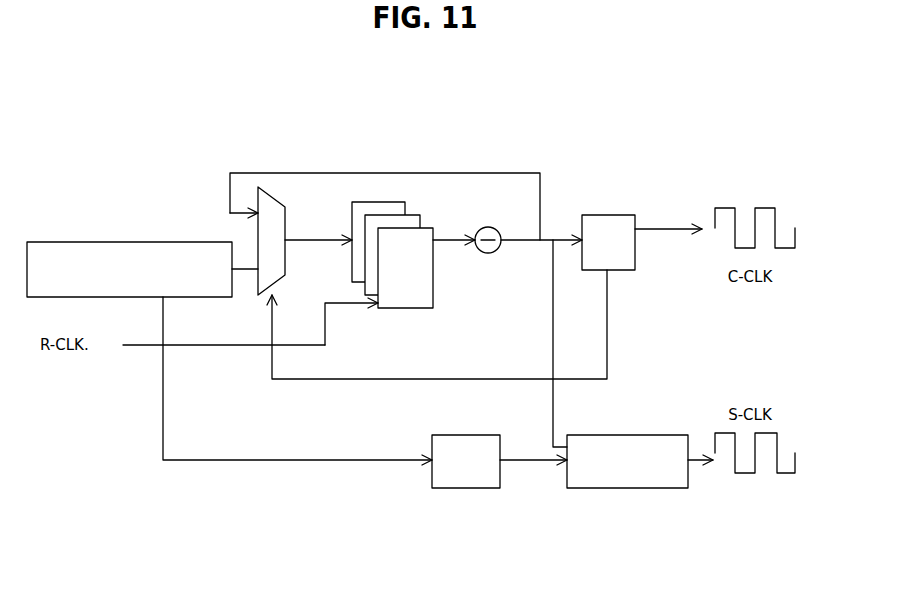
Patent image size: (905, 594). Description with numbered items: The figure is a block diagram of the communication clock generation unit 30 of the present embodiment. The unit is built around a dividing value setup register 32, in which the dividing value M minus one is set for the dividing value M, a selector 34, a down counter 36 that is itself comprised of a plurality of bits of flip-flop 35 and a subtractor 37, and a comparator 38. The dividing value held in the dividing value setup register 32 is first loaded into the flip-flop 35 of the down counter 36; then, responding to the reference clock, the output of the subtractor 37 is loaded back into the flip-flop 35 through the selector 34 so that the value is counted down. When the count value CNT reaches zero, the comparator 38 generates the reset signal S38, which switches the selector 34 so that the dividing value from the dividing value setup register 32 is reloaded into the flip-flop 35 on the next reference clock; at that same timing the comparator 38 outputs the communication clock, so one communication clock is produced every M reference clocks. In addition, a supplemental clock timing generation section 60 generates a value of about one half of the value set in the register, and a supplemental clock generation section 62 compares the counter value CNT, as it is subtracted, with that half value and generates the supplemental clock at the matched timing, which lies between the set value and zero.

The communication clock generation unit 30 is at (388, 148).
The dividing value setup register 32 is at (129, 257).
The selector 34 is at (283, 241).
The flip-flop 35 is at (410, 204).
The down counter 36 is at (430, 269).
The subtractor 37 is at (495, 226).
The comparator 38 is at (601, 231).
The supplemental clock timing generation section 60 is at (466, 478).
The supplemental clock generation section 62 is at (627, 478).
The reset signal S38 is at (457, 324).
The count value CNT is at (448, 243).